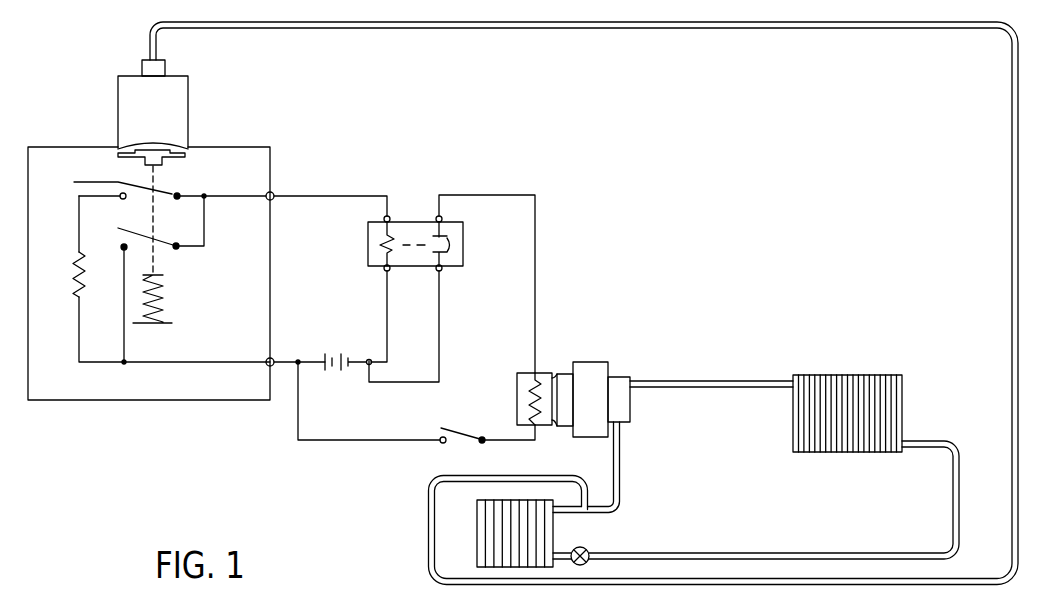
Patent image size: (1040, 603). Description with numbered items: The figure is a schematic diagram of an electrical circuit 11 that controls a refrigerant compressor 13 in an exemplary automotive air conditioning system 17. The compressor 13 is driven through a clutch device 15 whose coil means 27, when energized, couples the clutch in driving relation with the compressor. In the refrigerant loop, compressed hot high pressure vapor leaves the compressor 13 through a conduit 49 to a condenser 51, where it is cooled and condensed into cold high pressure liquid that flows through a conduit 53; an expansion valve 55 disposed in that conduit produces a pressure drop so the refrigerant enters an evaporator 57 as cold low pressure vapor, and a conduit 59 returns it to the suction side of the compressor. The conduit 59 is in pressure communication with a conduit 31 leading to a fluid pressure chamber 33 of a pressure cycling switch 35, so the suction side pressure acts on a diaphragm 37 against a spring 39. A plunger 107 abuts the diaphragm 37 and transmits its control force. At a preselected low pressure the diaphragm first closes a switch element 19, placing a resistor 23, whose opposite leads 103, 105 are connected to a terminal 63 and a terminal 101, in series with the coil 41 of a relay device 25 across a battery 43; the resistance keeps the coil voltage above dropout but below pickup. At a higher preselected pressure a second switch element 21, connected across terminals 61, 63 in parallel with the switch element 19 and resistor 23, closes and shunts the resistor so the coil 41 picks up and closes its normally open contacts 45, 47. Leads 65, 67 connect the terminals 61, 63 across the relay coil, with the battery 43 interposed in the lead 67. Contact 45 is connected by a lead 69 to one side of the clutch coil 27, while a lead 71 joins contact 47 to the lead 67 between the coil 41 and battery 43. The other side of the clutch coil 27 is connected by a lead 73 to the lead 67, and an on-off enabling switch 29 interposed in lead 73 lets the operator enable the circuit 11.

The electrical circuit 11 is at (566, 200).
The refrigerant compressor 13 is at (594, 362).
The clutch device 15 is at (560, 372).
The air conditioning system 17 is at (768, 335).
The switch element 19 is at (180, 192).
The switch element 21 is at (166, 250).
The resistor 23 is at (79, 277).
The relay device 25 is at (412, 222).
The coil means 27 is at (525, 408).
The enabling switch 29 is at (448, 444).
The conduit 31 is at (435, 28).
The fluid pressure chamber 33 is at (188, 92).
The pressure cycling switch 35 is at (62, 146).
The diaphragm 37 is at (182, 147).
The spring 39 is at (165, 300).
The coil 41 is at (380, 240).
The battery 43 is at (338, 354).
The contact 45 is at (445, 236).
The contact 47 is at (445, 253).
The conduit 49 is at (738, 380).
The condenser 51 is at (865, 375).
The conduit 53 is at (952, 522).
The expansion valve 55 is at (589, 550).
The evaporator 57 is at (477, 528).
The conduit 59 is at (622, 488).
The terminal 61 is at (273, 194).
The terminal 63 is at (273, 366).
The lead 65 is at (345, 195).
The lead 67 is at (292, 360).
The lead 69 is at (492, 195).
The lead 71 is at (441, 355).
The lead 73 is at (320, 442).
The terminal 101 is at (108, 186).
The resistor lead 103 is at (79, 230).
The resistor lead 105 is at (79, 323).
The plunger 107 is at (133, 158).